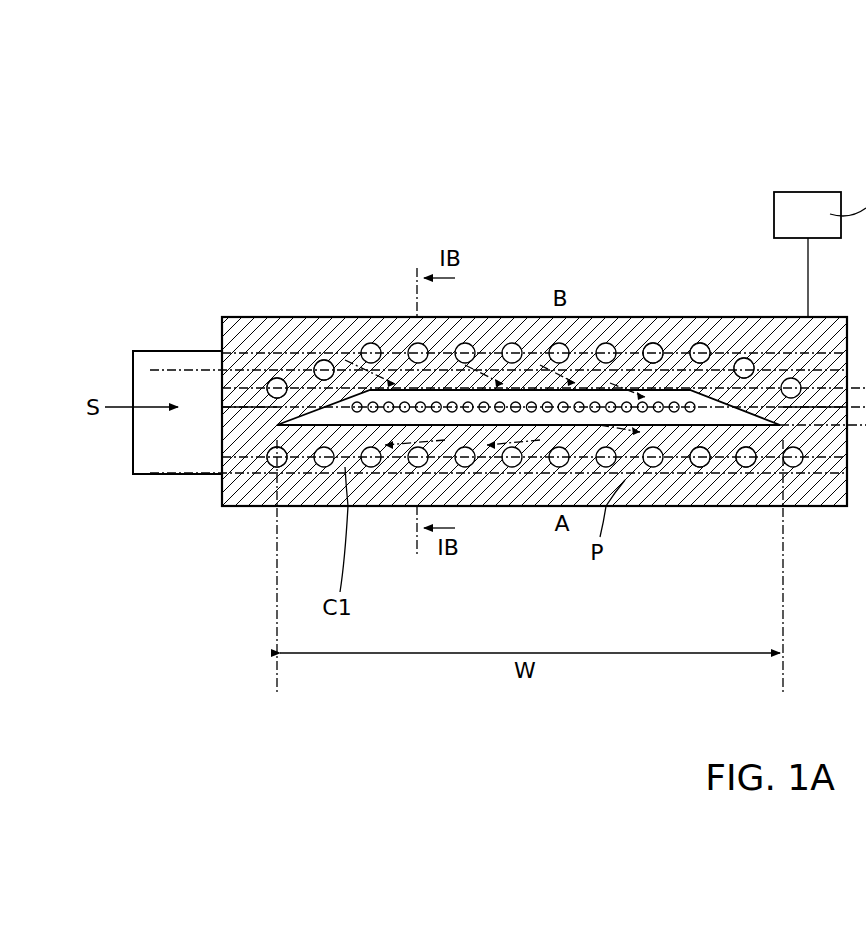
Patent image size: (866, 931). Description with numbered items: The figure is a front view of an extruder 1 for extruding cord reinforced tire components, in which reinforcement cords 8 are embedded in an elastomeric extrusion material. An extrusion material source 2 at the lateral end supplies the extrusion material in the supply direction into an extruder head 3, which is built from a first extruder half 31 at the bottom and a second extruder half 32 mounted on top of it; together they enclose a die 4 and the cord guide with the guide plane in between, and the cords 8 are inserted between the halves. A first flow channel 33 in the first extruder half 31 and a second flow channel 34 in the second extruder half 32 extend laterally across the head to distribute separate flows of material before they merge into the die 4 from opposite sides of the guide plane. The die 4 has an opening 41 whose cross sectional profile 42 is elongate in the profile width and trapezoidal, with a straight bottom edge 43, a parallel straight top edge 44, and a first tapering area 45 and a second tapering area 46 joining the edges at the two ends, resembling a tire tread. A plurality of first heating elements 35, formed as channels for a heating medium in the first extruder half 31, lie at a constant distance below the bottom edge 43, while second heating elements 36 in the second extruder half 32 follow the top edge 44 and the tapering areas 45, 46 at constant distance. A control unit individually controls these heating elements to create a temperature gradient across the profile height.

The extruder 1 is at (509, 146).
The extrusion material source 2 is at (166, 351).
The extruder head 3 is at (251, 317).
The die 4 is at (528, 407).
The opening 41 is at (528, 413).
The cross sectional profile 42 is at (482, 427).
The bottom edge 43 is at (395, 430).
The top edge 44 is at (485, 388).
The first tapering area 45 is at (305, 396).
The second tapering area 46 is at (750, 417).
The cords 8 is at (373, 394).
The first extruder half 31 is at (638, 487).
The second extruder half 32 is at (525, 342).
The first flow channel 33 is at (286, 466).
The second flow channel 34 is at (316, 361).
The first heating elements 35 is at (744, 469).
The second heating elements 36 is at (698, 344).